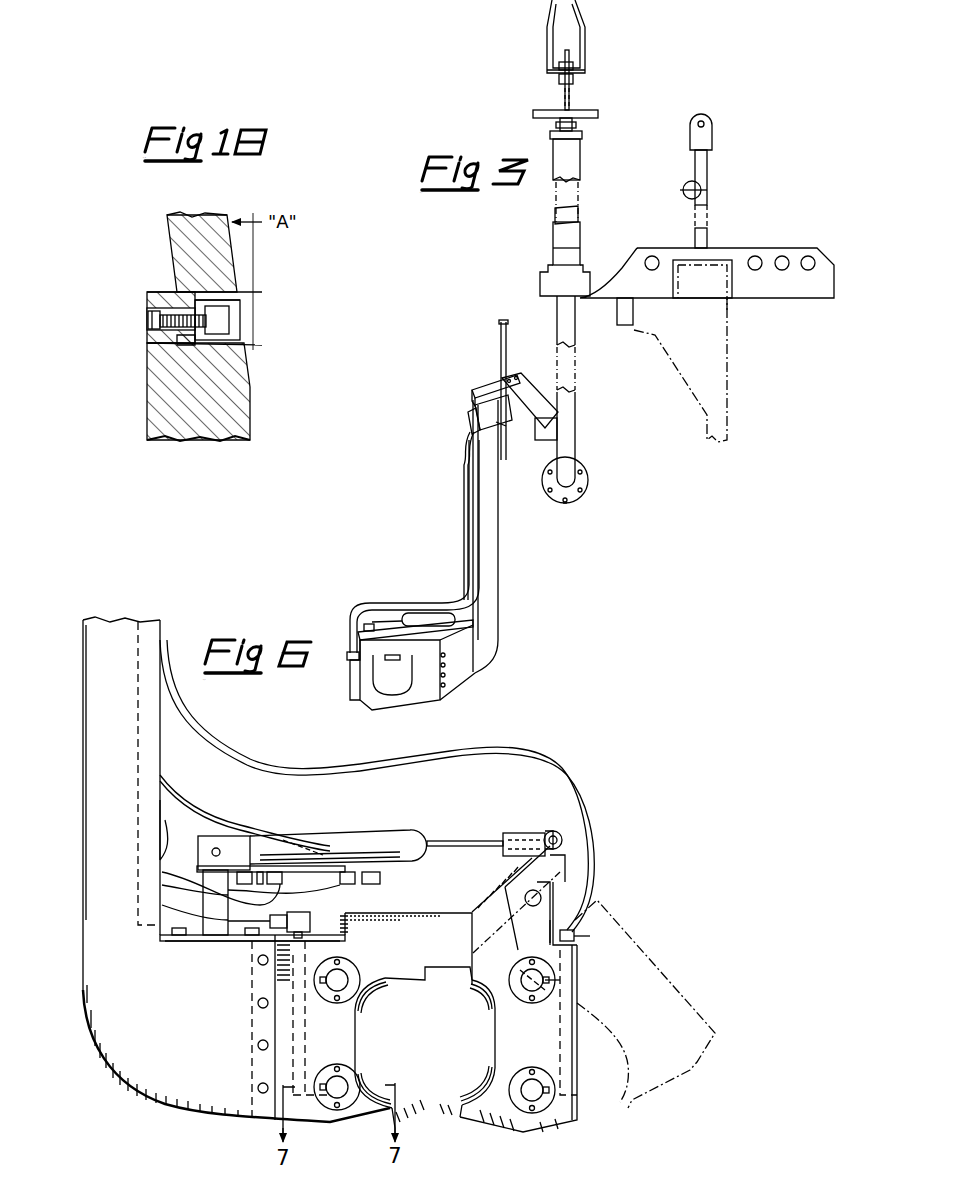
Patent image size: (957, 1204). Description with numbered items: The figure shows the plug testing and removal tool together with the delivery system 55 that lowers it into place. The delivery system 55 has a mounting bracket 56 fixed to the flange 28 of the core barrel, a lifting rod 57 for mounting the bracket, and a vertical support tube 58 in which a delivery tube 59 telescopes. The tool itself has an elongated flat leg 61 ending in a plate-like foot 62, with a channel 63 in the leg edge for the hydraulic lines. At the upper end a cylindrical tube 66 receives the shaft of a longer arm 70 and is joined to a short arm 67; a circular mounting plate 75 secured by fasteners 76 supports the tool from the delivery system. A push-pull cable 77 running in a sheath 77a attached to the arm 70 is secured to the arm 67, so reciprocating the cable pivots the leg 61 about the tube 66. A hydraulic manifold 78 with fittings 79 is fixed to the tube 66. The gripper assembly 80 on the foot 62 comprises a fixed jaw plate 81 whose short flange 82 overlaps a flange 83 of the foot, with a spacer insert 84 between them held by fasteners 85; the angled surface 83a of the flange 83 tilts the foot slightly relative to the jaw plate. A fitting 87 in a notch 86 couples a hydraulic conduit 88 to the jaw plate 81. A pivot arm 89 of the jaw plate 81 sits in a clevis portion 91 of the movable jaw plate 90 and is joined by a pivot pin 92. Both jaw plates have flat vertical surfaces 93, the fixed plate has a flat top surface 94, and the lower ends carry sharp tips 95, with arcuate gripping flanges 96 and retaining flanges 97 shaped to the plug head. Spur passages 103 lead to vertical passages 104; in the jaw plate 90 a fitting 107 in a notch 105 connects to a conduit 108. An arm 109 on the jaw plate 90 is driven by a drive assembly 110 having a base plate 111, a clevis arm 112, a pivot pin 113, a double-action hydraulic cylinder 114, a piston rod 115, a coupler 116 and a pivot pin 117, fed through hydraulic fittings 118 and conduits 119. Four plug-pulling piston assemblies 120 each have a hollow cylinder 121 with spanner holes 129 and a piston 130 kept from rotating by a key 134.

In FIG. 5, the flange 28 is at (680, 370).
In FIG. 5, the delivery system 55 is at (642, 114).
In FIG. 5, the mounting bracket 56 is at (769, 250).
In FIG. 5, the lifting rod 57 is at (708, 172).
In FIG. 5, the support tube 58 is at (580, 166).
In FIG. 5, the delivery tube 59 is at (578, 215).
In FIG. 5, the leg 61 is at (499, 540).
In FIG. 6, the leg 61 is at (92, 680).
In FIG. 18, the foot 62 is at (209, 215).
In FIG. 5, the foot 62 is at (465, 673).
In FIG. 6, the foot 62 is at (176, 1101).
In FIG. 6, the channel 63 is at (140, 618).
In FIG. 5, the cylindrical tube 66 is at (490, 393).
In FIG. 5, the short arm 67 is at (528, 420).
In FIG. 5, the longer arm 70 is at (522, 380).
In FIG. 5, the circular mounting plate 75 is at (586, 476).
In FIG. 5, the fasteners 76 is at (570, 503).
In FIG. 5, the push-pull cable 77 is at (500, 322).
In FIG. 5, the sheath 77a is at (501, 344).
In FIG. 5, the hydraulic manifold 78 is at (468, 414).
In FIG. 5, the fittings 79 is at (500, 428).
In FIG. 5, the gripper assembly 80 is at (345, 698).
In FIG. 6, the gripper assembly 80 is at (255, 757).
In FIG. 18, the fixed jaw plate 81 is at (243, 423).
In FIG. 6, the fixed jaw plate 81 is at (388, 913).
In FIG. 18, the short flange 82 is at (166, 300).
In FIG. 6, the short flange 82 is at (252, 1100).
In FIG. 18, the flange 83 is at (220, 328).
In FIG. 6, the flange 83 is at (275, 1062).
In FIG. 18, the surface 83a is at (223, 292).
In FIG. 18, the spacer insert 84 is at (177, 343).
In FIG. 18, the fasteners 85 is at (148, 321).
In FIG. 6, the fasteners 85 is at (260, 1045).
In FIG. 6, the rectangular notch 86 is at (345, 918).
In FIG. 6, the fitting 87 is at (304, 915).
In FIG. 6, the hydraulic conduit 88 is at (162, 910).
In FIG. 6, the pivot arm 89 is at (490, 898).
In FIG. 6, the movable jaw plate 90 is at (540, 1132).
In FIG. 6, the clevis portion 91 is at (498, 893).
In FIG. 6, the pivot pin 92 is at (560, 890).
In FIG. 6, the flat vertical surface 93 is at (495, 1040).
In FIG. 6, the flat top surface 94 is at (412, 980).
In FIG. 6, the tips 95 is at (460, 1118).
In FIG. 6, the arcuate gripping flanges 96 is at (482, 997).
In FIG. 6, the arcuate retaining flanges 97 is at (472, 1090).
In FIG. 6, the spur passage 103 is at (577, 1112).
In FIG. 6, the vertical passage 104 is at (577, 1060).
In FIG. 6, the rectangular notch 105 is at (590, 936).
In FIG. 6, the fitting 107 is at (603, 912).
In FIG. 6, the conduit 108 is at (458, 754).
In FIG. 6, the arm 109 is at (560, 860).
In FIG. 6, the drive assembly 110 is at (326, 818).
In FIG. 6, the base plate 111 is at (197, 941).
In FIG. 6, the clevis arm 112 is at (220, 928).
In FIG. 6, the pivot pin 113 is at (213, 850).
In FIG. 6, the hydraulic double-action cylinder 114 is at (355, 831).
In FIG. 6, the piston rod 115 is at (462, 841).
In FIG. 6, the coupler 116 is at (520, 833).
In FIG. 6, the pivot pin 117 is at (553, 831).
In FIG. 6, the hydraulic fittings 118 is at (247, 866).
In FIG. 6, the hydraulic conduits 119 is at (165, 850).
In FIG. 6, the plug-pulling piston assemblies 120 is at (535, 1008).
In FIG. 6, the hollow cylinder 121 is at (512, 1103).
In FIG. 6, the holes 129 is at (340, 961).
In FIG. 6, the piston 130 is at (528, 985).
In FIG. 6, the key 134 is at (560, 980).